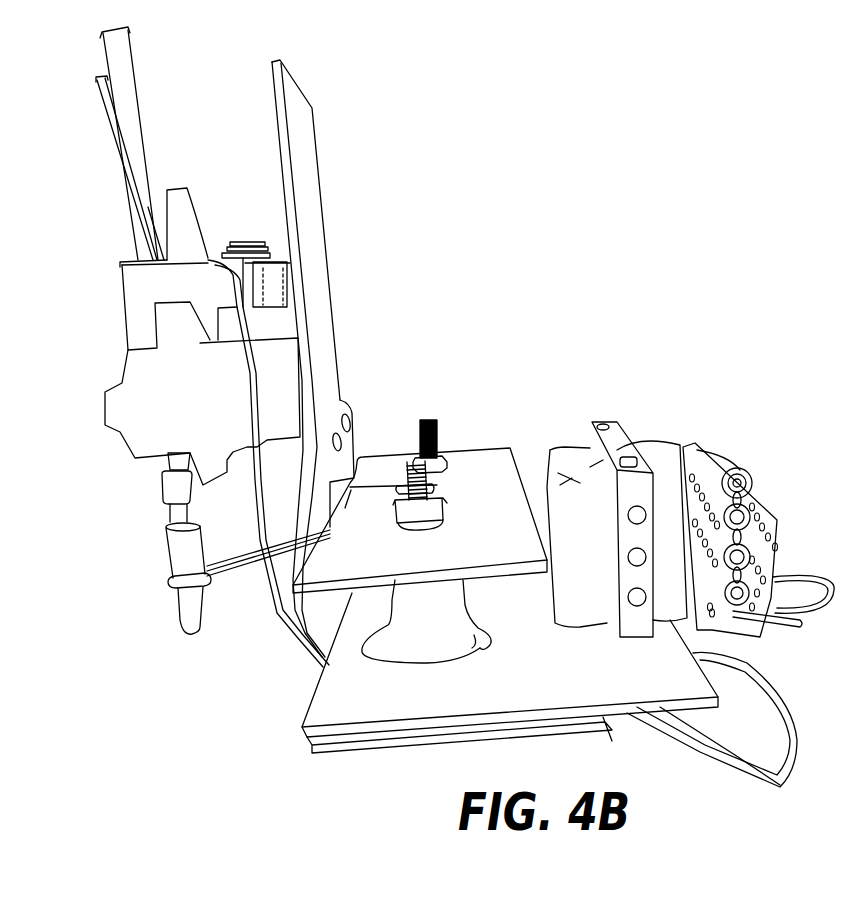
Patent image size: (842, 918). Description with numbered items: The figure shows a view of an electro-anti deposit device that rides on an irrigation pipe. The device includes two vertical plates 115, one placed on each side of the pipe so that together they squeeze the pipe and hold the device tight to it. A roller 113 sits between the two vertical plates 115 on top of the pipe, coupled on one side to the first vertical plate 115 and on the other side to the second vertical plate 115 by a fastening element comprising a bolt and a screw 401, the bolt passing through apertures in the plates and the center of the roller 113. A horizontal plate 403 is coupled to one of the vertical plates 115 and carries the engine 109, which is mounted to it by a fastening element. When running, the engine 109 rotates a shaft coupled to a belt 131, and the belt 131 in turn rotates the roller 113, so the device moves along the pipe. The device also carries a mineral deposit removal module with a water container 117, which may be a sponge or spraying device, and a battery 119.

The horizontal plate 403 is at (310, 155).
The engine 109 is at (263, 244).
The belt 131 is at (233, 580).
The vertical plate 115 is at (493, 473).
The bolt and screw 401 is at (427, 533).
The roller 113 is at (480, 648).
The water container 117 is at (668, 460).
The battery 119 is at (740, 470).